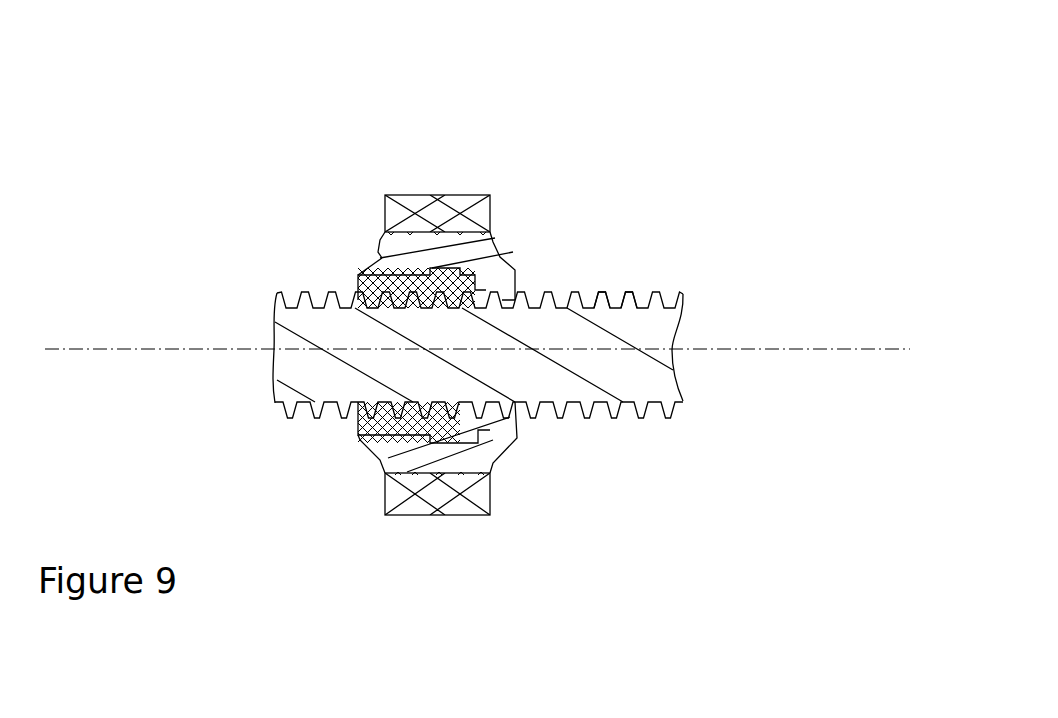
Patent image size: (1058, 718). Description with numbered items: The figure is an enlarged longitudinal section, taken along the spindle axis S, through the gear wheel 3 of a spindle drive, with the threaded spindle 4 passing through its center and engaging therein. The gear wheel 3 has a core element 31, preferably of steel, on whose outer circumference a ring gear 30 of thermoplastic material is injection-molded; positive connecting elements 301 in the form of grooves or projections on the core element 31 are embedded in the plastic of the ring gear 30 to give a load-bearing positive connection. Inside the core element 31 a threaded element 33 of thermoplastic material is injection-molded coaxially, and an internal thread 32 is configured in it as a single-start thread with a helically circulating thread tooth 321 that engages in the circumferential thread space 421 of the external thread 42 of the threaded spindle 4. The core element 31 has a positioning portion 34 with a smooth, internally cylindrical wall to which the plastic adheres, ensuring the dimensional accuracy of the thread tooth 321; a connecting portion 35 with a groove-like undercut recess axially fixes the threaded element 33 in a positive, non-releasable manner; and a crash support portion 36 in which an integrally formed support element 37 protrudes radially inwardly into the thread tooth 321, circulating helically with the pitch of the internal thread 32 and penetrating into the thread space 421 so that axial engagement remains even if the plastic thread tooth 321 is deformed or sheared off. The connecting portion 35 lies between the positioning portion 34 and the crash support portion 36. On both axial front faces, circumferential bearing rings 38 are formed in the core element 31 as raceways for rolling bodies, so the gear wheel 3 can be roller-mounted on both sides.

The gear wheel 3 is at (435, 160).
The ring gear 30 is at (488, 197).
The positive connecting elements 301 is at (450, 265).
The core element 31 is at (385, 172).
The internal thread 32 is at (352, 296).
The thread tooth 321 is at (370, 288).
The threaded element 33 is at (358, 277).
The positioning portion 34 is at (454, 481).
The connecting portion 35 is at (449, 440).
The crash support portion 36 is at (514, 534).
The support element 37 is at (518, 423).
The bearing rings 38 is at (418, 293).
The threaded spindle 4 is at (524, 324).
The external thread 42 is at (680, 412).
The circumferential thread space 421 is at (618, 298).
The spindle axis S is at (778, 350).